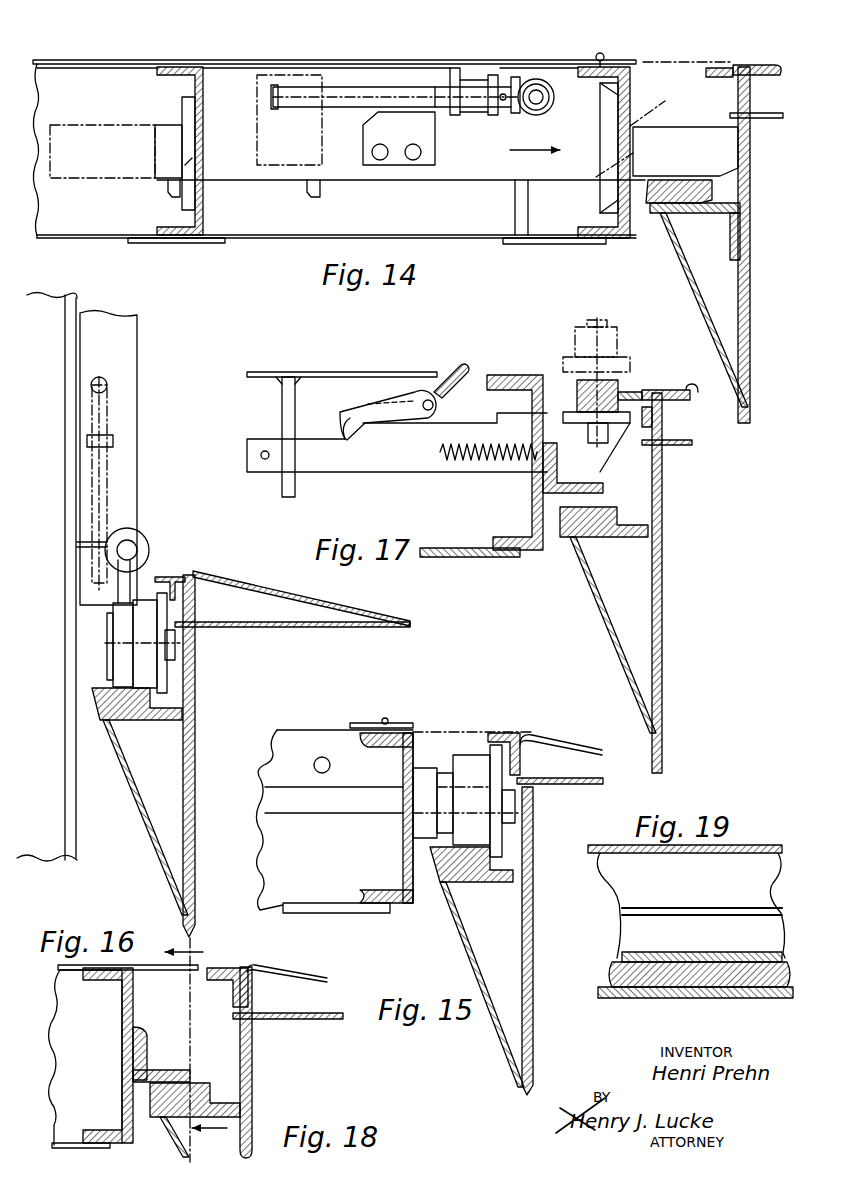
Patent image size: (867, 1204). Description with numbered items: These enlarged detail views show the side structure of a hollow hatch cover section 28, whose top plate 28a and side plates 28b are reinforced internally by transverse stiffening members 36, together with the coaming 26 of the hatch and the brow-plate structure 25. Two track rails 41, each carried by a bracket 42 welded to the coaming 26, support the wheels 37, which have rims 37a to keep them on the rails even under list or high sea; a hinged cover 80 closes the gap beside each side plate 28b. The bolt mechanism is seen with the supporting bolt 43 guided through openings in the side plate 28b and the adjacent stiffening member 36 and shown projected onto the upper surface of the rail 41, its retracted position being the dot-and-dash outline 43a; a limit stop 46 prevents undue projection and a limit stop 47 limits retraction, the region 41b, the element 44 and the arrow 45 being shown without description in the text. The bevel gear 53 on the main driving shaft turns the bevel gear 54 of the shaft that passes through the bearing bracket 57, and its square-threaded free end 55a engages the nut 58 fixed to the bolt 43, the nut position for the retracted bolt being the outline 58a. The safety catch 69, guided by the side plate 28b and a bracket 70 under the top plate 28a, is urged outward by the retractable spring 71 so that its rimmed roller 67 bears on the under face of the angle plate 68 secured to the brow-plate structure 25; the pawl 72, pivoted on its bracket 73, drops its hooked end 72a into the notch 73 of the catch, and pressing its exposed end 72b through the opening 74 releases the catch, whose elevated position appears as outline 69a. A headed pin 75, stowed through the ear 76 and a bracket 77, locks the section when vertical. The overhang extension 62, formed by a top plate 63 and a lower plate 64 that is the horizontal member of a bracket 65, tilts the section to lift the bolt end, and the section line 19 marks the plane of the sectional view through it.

In FIG. 18, the section line 19— 19 is at (197, 1050).
In FIG. 17, the brow-plate structure 25 is at (683, 390).
In FIG. 16, the brow-plate structure 25 is at (243, 581).
In FIG. 15, the brow-plate structure 25 is at (568, 782).
In FIG. 18, the brow-plate structure 25 is at (290, 974).
In FIG. 14, the coaming 26 is at (752, 350).
In FIG. 17, the coaming 26 is at (664, 622).
In FIG. 16, the coaming 26 is at (195, 668).
In FIG. 15, the coaming 26 is at (533, 972).
In FIG. 18, the coaming 26 is at (253, 1067).
In FIG. 19, the coaming 26 is at (697, 998).
In FIG. 16, the cover section 28 is at (47, 577).
In FIG. 14, the top plate 28a is at (476, 62).
In FIG. 17, the top plate 28a is at (280, 372).
In FIG. 14, the side plates 28b is at (631, 100).
In FIG. 17, the side plates 28b is at (553, 538).
In FIG. 16, the side plates 28b is at (68, 467).
In FIG. 18, the side plates 28b is at (133, 1117).
In FIG. 19, the side plates 28b is at (743, 882).
In FIG. 14, the stiffening members 36 is at (203, 205).
In FIG. 16, the wheel 37 is at (145, 605).
In FIG. 15, the wheel 37 is at (470, 770).
In FIG. 16, the rim 37a is at (157, 605).
In FIG. 14, the track rails 41 is at (662, 215).
In FIG. 17, the track rails 41 is at (574, 540).
In FIG. 16, the track rails 41 is at (148, 708).
In FIG. 15, the track rails 41 is at (445, 873).
In FIG. 18, the track rails 41 is at (195, 1100).
In FIG. 19, the track rails 41 is at (613, 977).
In FIG. 14, the support block portion 41b is at (646, 186).
In FIG. 14, the bracket 42 is at (712, 322).
In FIG. 17, the bracket 42 is at (606, 633).
In FIG. 16, the bracket 42 is at (154, 722).
In FIG. 15, the bracket 42 is at (482, 918).
In FIG. 18, the bracket 42 is at (174, 1137).
In FIG. 14, the bolt 43 is at (476, 167).
In FIG. 14, the retracted position of the bolt 43a is at (107, 153).
In FIG. 14, the stop block 44 is at (738, 168).
In FIG. 14, the direction of movement 45 is at (520, 147).
In FIG. 14, the limit stop 46 is at (177, 192).
In FIG. 14, the limit stop 47 is at (313, 193).
In FIG. 14, the bevel gear 53 is at (548, 82).
In FIG. 14, the bevel gear 54 is at (516, 82).
In FIG. 14, the square-threaded free end 55a is at (338, 92).
In FIG. 14, the bearing bracket 57 is at (445, 70).
In FIG. 14, the nut 58 is at (393, 118).
In FIG. 14, the retracted position of the nut 58a is at (278, 118).
In FIG. 18, the overhang extension 62 is at (210, 1024).
In FIG. 19, the overhang extension 62 is at (597, 913).
In FIG. 18, the top plate 63 is at (167, 970).
In FIG. 19, the top plate 63 is at (737, 840).
In FIG. 17, the lowerly disposed plate 64 is at (603, 489).
In FIG. 18, the lowerly disposed plate 64 is at (172, 1073).
In FIG. 19, the lowerly disposed plate 64 is at (795, 980).
In FIG. 18, the bracket 65 is at (147, 1047).
In FIG. 19, the bracket 65 is at (740, 910).
In FIG. 17, the rimmed roller 67 is at (583, 397).
In FIG. 17, the angle plate 68 is at (637, 392).
In FIG. 17, the safety catch 69 is at (400, 462).
In FIG. 17, the elevated position of the safety catch 69a is at (540, 347).
In FIG. 17, the bracket 70 is at (287, 417).
In FIG. 17, the retractable spring 71 is at (500, 455).
In FIG. 17, the pawl 72 is at (366, 412).
In FIG. 17, the hooked end 72a is at (343, 427).
In FIG. 17, the exposed end 72b is at (465, 365).
In FIG. 17, the bracket / notch 73 is at (373, 440).
In FIG. 17, the opening 74 is at (489, 405).
In FIG. 16, the headed pin 75 is at (100, 497).
In FIG. 16, the ear 76 is at (113, 440).
In FIG. 16, the bracket 77 is at (103, 540).
In FIG. 14, the hinged cover 80 is at (700, 62).
In FIG. 16, the hinged cover 80 is at (118, 371).
In FIG. 15, the hinged cover 80 is at (442, 727).